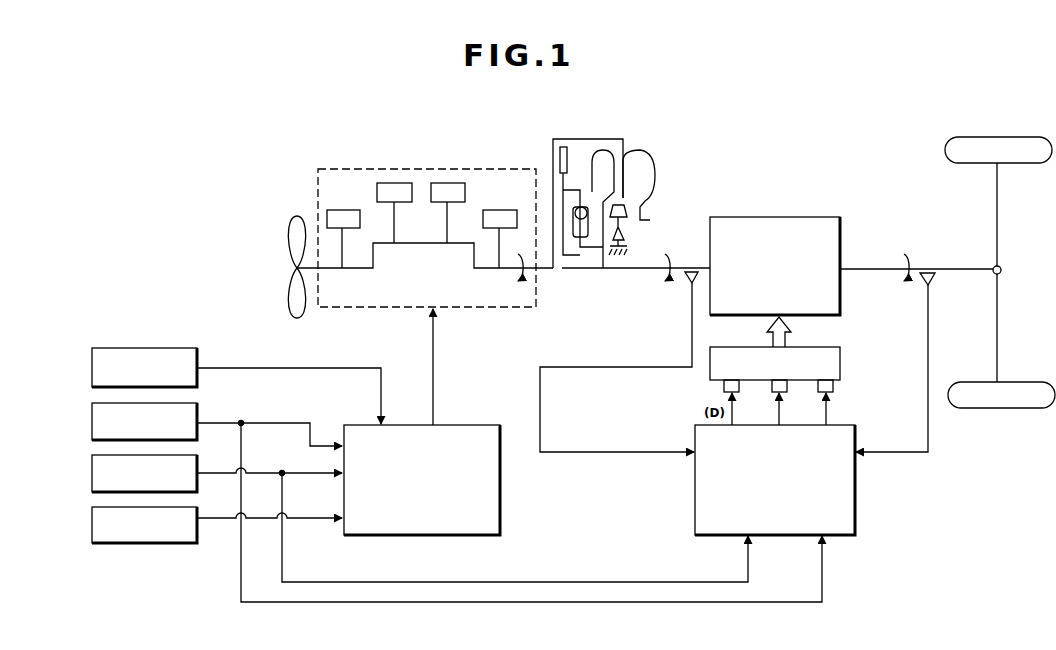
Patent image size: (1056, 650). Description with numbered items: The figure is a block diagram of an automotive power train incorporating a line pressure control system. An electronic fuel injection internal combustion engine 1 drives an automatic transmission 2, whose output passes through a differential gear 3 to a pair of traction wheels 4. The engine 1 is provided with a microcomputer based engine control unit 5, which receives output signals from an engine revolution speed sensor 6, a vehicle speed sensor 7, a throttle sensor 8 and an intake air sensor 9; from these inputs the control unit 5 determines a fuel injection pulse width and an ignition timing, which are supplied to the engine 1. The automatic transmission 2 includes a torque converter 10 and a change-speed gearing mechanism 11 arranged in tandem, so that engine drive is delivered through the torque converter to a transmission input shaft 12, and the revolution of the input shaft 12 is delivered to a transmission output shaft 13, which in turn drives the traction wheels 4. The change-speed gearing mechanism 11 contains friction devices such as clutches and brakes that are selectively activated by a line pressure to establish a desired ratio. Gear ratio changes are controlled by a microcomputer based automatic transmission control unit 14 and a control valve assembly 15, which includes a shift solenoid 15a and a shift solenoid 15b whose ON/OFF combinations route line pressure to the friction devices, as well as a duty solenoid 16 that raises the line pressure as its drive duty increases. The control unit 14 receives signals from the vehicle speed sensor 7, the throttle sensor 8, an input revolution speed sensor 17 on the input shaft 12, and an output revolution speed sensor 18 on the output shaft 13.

The electronic fuel injection internal combustion engine 1 is at (393, 166).
The automatic transmission 2 is at (778, 214).
The differential gear 3 is at (1002, 268).
The pair of traction wheels 4 is at (1007, 137).
The engine control unit 5 is at (406, 423).
The engine revolution speed sensor 6 is at (92, 524).
The vehicle speed sensor 7 is at (92, 475).
The throttle sensor 8 is at (92, 425).
The intake air sensor 9 is at (92, 372).
The torque converter 10 is at (647, 150).
The change-speed gearing mechanism 11 is at (820, 217).
The transmission input shaft 12 is at (622, 270).
The transmission output shaft 13 is at (862, 268).
The automatic transmission control unit 14 is at (857, 498).
The control valve assembly 15 is at (842, 360).
The shift solenoid 15a is at (837, 385).
The shift solenoid 15b is at (787, 386).
The duty solenoid 16 is at (723, 385).
The input revolution speed sensor 17 is at (687, 283).
The output revolution speed sensor 18 is at (933, 276).